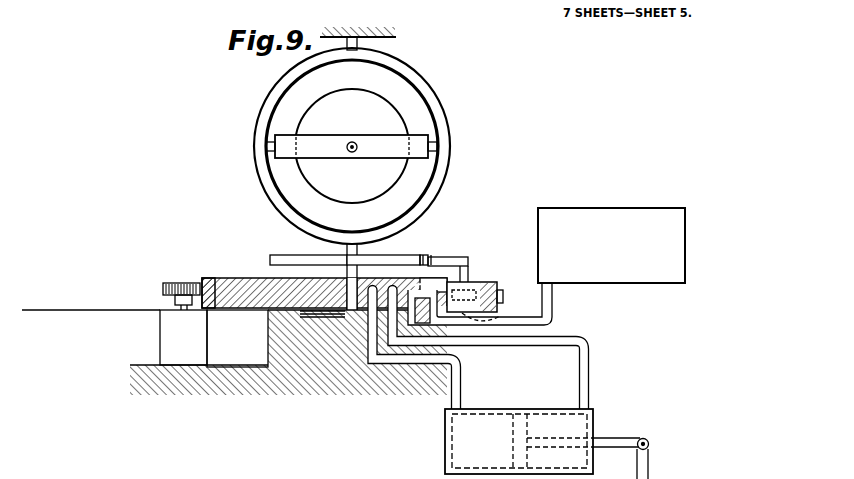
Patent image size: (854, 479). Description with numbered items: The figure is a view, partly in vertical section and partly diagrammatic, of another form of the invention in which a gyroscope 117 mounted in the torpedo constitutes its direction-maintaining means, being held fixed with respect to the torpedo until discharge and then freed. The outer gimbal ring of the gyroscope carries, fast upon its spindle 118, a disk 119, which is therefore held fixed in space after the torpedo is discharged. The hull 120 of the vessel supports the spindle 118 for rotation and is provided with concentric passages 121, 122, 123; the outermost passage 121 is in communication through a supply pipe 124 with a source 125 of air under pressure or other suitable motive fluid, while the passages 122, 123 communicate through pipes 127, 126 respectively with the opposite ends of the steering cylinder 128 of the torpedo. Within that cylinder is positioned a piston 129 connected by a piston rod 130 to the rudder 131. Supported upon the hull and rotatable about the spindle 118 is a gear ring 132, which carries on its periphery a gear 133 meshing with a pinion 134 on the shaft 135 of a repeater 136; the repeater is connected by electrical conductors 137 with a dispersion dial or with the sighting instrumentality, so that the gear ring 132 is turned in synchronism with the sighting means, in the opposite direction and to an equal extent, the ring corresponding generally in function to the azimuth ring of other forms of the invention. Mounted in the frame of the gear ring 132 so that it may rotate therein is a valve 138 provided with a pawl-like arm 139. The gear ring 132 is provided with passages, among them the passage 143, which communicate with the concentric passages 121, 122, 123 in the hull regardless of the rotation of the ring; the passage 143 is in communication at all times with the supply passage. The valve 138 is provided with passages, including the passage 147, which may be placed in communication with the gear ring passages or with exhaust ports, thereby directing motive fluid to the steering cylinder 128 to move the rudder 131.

The gyroscope 117 is at (432, 66).
The spindle 118 is at (347, 257).
The disk 119 is at (270, 258).
The hull 120 is at (317, 373).
The concentric passage 121 is at (322, 311).
The concentric passage 122 is at (324, 313).
The concentric passage 123 is at (326, 315).
The supply pipe 124 is at (548, 307).
The source of air under pressure 125 is at (603, 200).
The pipe 126 is at (455, 388).
The pipe 127 is at (521, 346).
The steering cylinder 128 is at (550, 413).
The piston 129 is at (512, 437).
The piston rod 130 is at (617, 441).
The rudder 131 is at (675, 464).
The gear ring 132 is at (223, 282).
The gear 133 is at (202, 282).
The pinion 134 is at (163, 290).
The shaft 135 is at (178, 308).
The repeater 136 is at (172, 340).
The electrical conductors 137 is at (72, 306).
The valve 138 is at (472, 285).
The pawl-like arm 139 is at (453, 258).
The passage 143 is at (424, 256).
The valve passage 147 is at (500, 310).